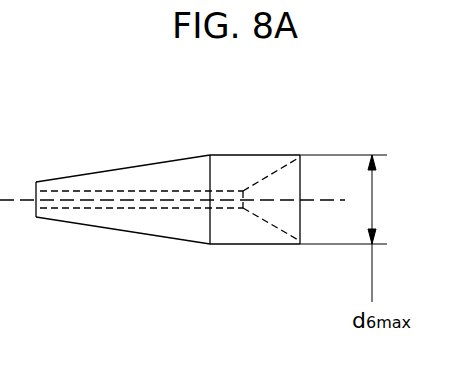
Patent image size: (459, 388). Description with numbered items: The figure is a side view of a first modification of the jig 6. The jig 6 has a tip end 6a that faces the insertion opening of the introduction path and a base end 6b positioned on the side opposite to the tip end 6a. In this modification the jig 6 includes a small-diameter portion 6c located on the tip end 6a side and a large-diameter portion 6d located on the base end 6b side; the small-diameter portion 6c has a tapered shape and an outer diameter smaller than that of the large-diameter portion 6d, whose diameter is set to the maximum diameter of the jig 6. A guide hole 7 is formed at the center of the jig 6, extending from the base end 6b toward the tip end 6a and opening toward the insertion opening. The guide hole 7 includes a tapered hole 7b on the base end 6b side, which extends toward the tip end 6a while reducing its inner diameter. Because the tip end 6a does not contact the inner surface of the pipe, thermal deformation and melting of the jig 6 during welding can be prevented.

The jig 6 is at (169, 196).
The tip end 6a is at (36, 217).
The base end 6b is at (300, 226).
The small-diameter portion 6c is at (131, 168).
The large-diameter portion 6d is at (241, 155).
The guide hole 7 is at (110, 192).
The tapered hole 7b is at (272, 222).